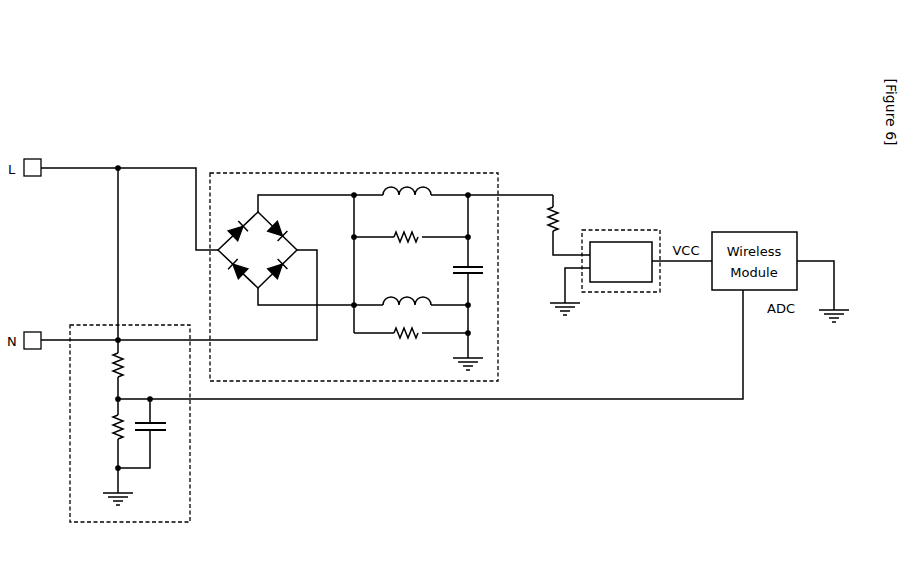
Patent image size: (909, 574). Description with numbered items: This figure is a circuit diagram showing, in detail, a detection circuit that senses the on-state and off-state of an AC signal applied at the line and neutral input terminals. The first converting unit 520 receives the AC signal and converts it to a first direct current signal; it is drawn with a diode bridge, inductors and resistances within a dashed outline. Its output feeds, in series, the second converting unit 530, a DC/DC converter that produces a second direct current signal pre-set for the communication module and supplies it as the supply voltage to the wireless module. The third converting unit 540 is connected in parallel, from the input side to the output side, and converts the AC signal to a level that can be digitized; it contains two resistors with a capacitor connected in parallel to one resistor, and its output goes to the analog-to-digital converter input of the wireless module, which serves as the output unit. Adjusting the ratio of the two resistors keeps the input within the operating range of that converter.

The first converting unit 520 is at (427, 173).
The second converting unit 530 is at (623, 230).
The third converting unit 540 is at (190, 495).